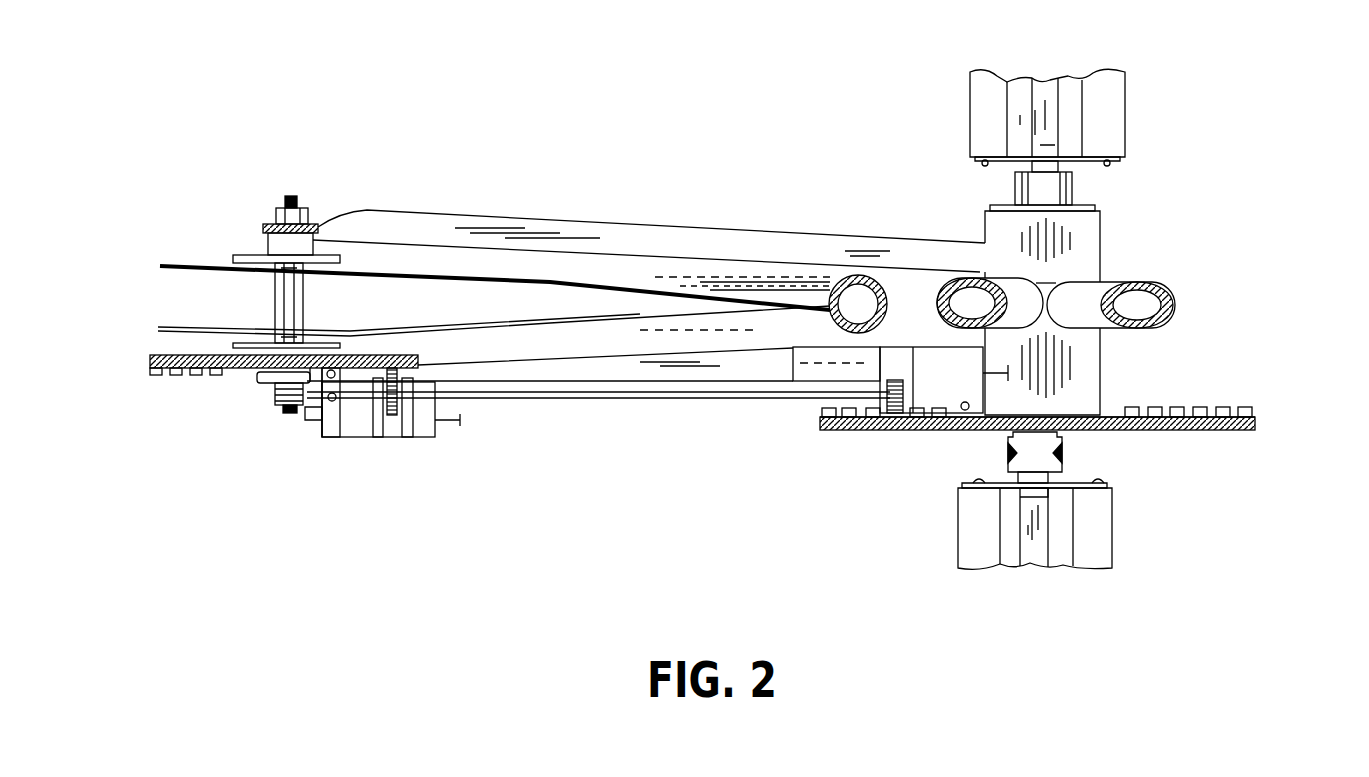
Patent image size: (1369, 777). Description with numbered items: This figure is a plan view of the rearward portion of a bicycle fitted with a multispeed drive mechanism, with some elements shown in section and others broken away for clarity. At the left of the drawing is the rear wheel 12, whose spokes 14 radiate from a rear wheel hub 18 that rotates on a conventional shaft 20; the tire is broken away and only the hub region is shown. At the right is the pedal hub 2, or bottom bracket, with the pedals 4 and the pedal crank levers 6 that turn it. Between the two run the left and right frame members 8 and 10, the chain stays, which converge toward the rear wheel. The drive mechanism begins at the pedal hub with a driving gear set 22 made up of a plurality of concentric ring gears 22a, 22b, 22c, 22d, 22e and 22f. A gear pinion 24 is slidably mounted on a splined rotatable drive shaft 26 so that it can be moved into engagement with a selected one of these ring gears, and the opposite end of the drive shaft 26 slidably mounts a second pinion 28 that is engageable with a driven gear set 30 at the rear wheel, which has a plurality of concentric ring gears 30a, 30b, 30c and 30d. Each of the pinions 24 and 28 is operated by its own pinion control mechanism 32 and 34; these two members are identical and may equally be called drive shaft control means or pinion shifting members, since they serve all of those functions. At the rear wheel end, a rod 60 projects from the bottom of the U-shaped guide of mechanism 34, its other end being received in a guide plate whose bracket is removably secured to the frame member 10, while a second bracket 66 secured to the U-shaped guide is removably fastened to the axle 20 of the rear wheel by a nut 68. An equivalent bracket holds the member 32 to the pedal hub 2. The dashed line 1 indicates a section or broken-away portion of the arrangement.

The drive cable 1 is at (727, 283).
The hub (bottom bracket) 2 is at (1056, 313).
The pedal 4 is at (1112, 115).
The pedal crank lever 6 is at (1048, 186).
The left frame member (chain stay) 8 is at (607, 240).
The right frame member (chain stay) 10 is at (618, 375).
The wheel 12 is at (830, 290).
The spokes 14 is at (548, 326).
The rear wheel hub 18 is at (268, 302).
The shaft (axle) 20 is at (290, 198).
The driving gear set 22 is at (889, 444).
The ring gear 22a is at (1133, 408).
The ring gear 22b is at (1153, 408).
The ring gear 22c is at (1177, 408).
The ring gear 22d is at (1200, 408).
The ring gear 22e is at (1223, 408).
The ring gear 22f is at (1243, 408).
The gear pinion 24 is at (885, 427).
The splined rotatable drive shaft 26 is at (697, 394).
The pinion 28 is at (397, 433).
The driven gear set 30 is at (378, 358).
The ring gear 30a is at (213, 376).
The ring gear 30b is at (194, 376).
The ring gear 30c is at (174, 376).
The ring gear 30d is at (155, 376).
The pinion control mechanism 32 is at (937, 353).
The pinion control mechanism 34 is at (343, 447).
The rod 60 is at (359, 433).
The second bracket 66 is at (265, 385).
The nut 68 is at (288, 414).